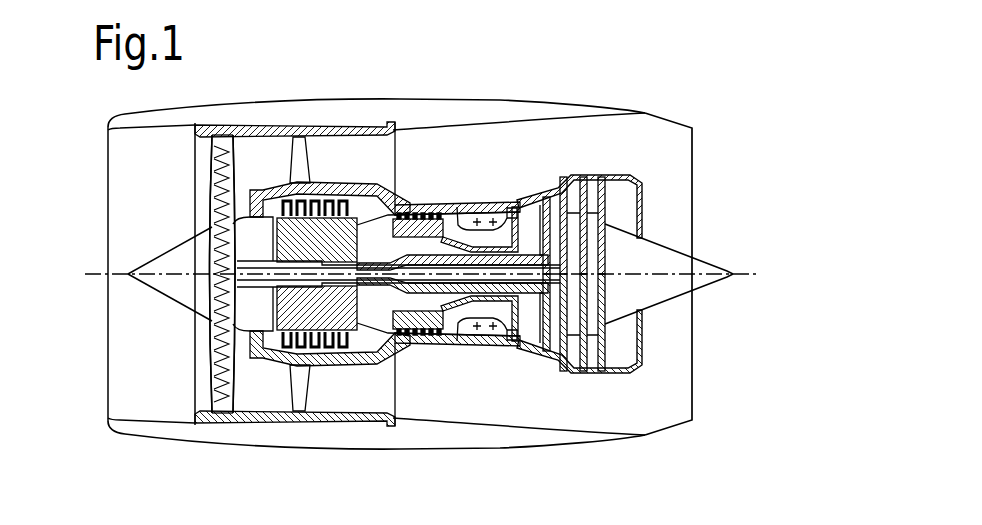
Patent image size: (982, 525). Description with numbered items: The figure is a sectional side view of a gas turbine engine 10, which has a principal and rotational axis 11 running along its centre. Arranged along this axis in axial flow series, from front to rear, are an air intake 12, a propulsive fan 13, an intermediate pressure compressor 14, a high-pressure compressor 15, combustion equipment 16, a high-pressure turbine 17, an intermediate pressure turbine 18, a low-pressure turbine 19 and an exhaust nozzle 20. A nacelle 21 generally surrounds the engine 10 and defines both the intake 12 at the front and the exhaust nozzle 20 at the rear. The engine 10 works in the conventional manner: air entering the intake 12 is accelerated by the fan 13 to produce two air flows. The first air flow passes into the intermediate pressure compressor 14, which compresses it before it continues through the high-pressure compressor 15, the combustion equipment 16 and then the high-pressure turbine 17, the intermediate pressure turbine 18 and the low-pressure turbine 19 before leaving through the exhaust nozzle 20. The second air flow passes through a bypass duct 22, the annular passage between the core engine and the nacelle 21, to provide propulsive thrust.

The gas turbine engine 10 is at (86, 143).
The principal and rotational axis 11 is at (103, 272).
The air intake 12 is at (162, 128).
The propulsive fan 13 is at (210, 378).
The intermediate pressure compressor 14 is at (320, 356).
The high-pressure compressor 15 is at (420, 217).
The combustion equipment 16 is at (460, 343).
The high-pressure turbine 17 is at (513, 345).
The intermediate pressure turbine 18 is at (570, 188).
The low-pressure turbine 19 is at (563, 353).
The exhaust nozzle 20 is at (692, 385).
The nacelle 21 is at (540, 101).
The bypass duct 22 is at (375, 169).